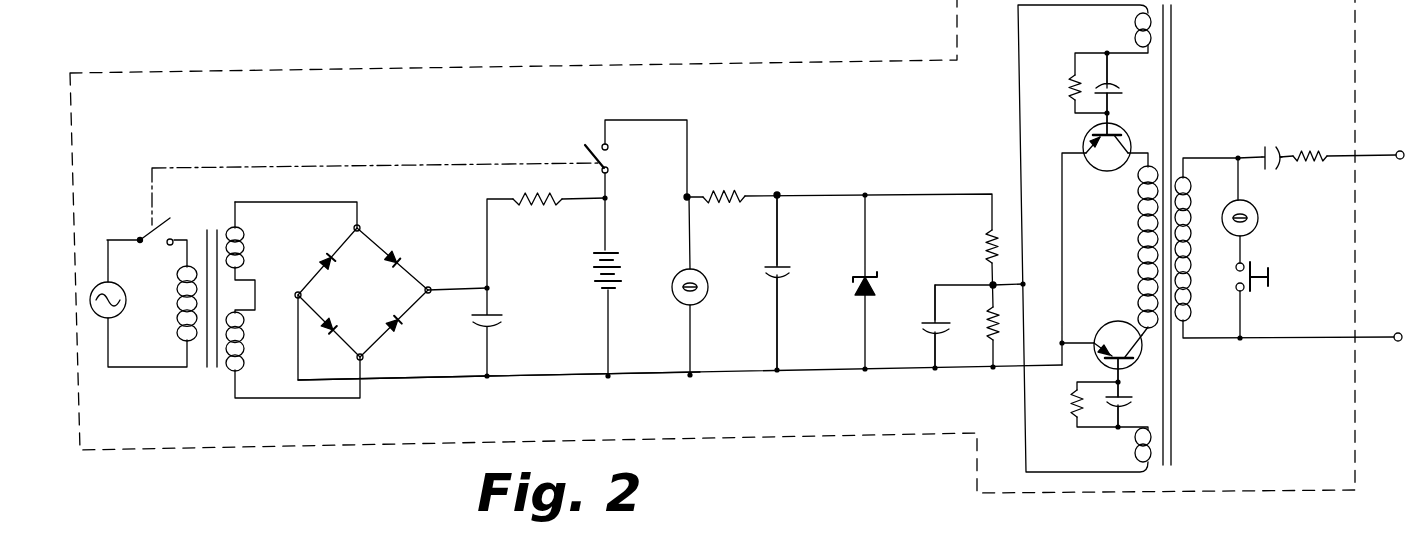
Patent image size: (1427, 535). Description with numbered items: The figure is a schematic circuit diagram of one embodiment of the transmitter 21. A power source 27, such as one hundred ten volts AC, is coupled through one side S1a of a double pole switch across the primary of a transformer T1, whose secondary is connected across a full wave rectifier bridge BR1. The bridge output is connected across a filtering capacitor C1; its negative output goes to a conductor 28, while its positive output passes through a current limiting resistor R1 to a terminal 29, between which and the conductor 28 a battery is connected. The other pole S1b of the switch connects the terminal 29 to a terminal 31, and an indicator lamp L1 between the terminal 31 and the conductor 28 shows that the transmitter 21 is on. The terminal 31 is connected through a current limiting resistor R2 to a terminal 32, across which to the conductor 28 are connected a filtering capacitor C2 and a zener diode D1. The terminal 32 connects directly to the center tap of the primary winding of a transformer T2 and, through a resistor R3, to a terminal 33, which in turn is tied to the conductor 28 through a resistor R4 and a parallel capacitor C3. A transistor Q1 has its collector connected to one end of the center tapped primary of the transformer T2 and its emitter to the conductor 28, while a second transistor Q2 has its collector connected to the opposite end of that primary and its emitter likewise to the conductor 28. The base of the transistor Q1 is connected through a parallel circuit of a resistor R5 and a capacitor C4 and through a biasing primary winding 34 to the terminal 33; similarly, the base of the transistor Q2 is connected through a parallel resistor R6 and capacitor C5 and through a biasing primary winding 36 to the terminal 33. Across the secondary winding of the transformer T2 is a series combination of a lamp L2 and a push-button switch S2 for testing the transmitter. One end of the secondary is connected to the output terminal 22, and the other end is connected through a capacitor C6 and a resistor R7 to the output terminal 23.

The transmitter 21 is at (912, 58).
The output terminal 22 is at (1403, 340).
The output terminal 23 is at (1417, 140).
The power source 27 is at (153, 309).
The conductor 28 is at (437, 381).
The terminal 29 is at (606, 201).
The terminal 31 is at (686, 196).
The terminal 32 is at (778, 194).
The terminal 33 is at (992, 284).
The biasing primary winding 34 is at (1130, 32).
The biasing primary winding 36 is at (1143, 445).
The first pole of double pole switch S1a is at (142, 226).
The second pole of double pole switch S1b is at (597, 140).
The push-button switch S2 is at (1243, 290).
The transformer T1 is at (223, 186).
The transformer T2 is at (1180, 153).
The full wave rectifier bridge BR1 is at (364, 251).
The filtering capacitor C1 is at (494, 327).
The filtering capacitor C2 is at (791, 272).
The capacitor C3 is at (928, 324).
The capacitor C4 is at (1117, 88).
The capacitor C5 is at (1128, 402).
The capacitor C6 is at (1282, 147).
The current limiting resistor R1 is at (537, 216).
The current limiting resistor R2 is at (724, 215).
The resistor R3 is at (974, 246).
The resistor R4 is at (988, 322).
The resistor R5 is at (1073, 95).
The resistor R6 is at (1073, 413).
The resistor R7 is at (1332, 142).
The zener diode D1 is at (872, 263).
The indicator lamp L1 is at (706, 300).
The lamp L2 is at (1259, 207).
The transistor Q1 is at (1093, 167).
The transistor Q2 is at (1130, 321).